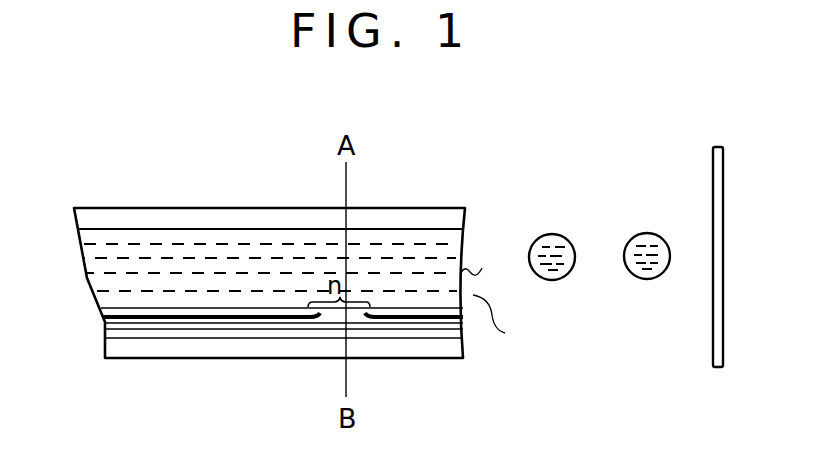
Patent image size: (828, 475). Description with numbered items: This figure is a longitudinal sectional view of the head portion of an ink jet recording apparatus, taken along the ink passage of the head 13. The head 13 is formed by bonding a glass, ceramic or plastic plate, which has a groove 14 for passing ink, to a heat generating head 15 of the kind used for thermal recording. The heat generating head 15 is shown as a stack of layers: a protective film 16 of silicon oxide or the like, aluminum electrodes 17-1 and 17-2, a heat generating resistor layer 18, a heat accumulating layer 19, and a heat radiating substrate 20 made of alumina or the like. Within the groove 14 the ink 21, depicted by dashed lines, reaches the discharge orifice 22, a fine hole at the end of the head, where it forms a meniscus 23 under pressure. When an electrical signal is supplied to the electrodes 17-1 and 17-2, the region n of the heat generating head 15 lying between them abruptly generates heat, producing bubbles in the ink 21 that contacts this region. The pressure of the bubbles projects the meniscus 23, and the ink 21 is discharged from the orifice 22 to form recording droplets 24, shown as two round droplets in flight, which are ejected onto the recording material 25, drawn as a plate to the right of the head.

The head 13 is at (197, 208).
The groove 14 is at (257, 229).
The heat generating head 15 is at (73, 303).
The protective film 16 is at (135, 312).
The aluminum electrode 17-1 is at (180, 320).
The aluminum electrode 17-2 is at (448, 325).
The heat generating resistor layer 18 is at (255, 328).
The heat accumulating layer 19 is at (305, 333).
The heat radiating substrate 20 is at (395, 348).
The ink 21 is at (118, 242).
The discharge orifice 22 is at (509, 322).
The meniscus 23 is at (490, 270).
The recording droplets 24 is at (678, 232).
The recording material 25 is at (713, 197).